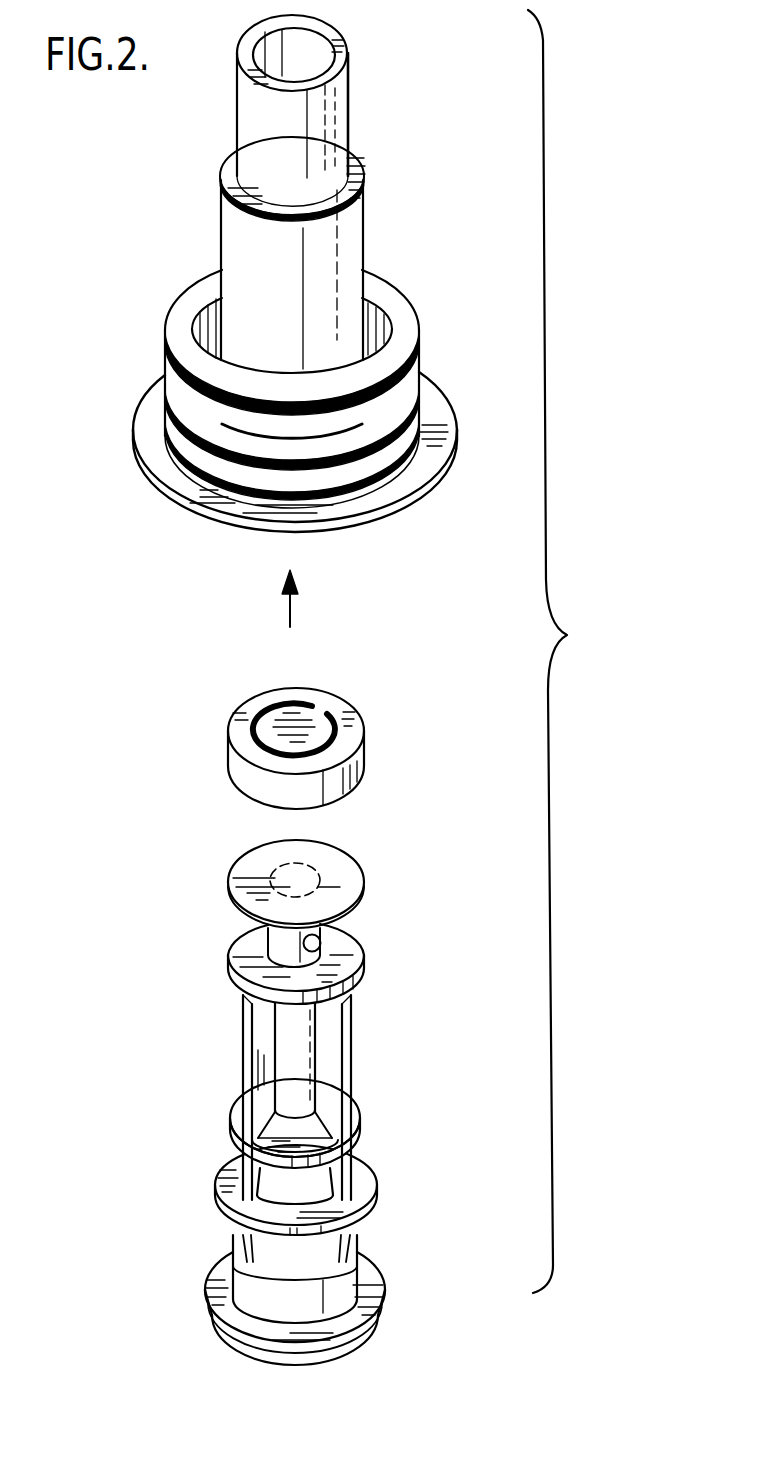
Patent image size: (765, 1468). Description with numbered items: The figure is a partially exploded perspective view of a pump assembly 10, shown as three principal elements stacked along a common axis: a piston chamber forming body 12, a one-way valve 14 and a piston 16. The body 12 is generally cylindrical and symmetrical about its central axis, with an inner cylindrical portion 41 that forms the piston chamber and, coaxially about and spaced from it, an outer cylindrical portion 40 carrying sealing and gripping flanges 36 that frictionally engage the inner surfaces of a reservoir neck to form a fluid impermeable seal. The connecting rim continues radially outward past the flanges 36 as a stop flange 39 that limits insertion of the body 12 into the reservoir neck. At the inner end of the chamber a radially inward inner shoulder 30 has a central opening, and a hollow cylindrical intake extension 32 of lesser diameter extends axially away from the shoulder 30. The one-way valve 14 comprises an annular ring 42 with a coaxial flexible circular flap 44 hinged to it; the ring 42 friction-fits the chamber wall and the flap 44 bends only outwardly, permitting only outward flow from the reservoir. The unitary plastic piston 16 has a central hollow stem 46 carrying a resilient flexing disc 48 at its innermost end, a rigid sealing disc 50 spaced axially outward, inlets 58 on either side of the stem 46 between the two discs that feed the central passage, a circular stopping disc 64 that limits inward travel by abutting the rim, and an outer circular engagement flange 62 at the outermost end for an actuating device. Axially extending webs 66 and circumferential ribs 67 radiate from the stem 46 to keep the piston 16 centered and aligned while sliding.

The pump assembly 10 is at (605, 661).
The piston chamber forming body 12 is at (281, 273).
The one-way valve 14 is at (294, 760).
The piston 16 is at (301, 1102).
The inner shoulder 30 is at (367, 167).
The intake extension 32 is at (330, 115).
The sealing and gripping flanges 36 is at (180, 440).
The stop flange 39 is at (430, 457).
The outer cylindrical portion 40 is at (192, 398).
The inner cylindrical portion 41 is at (357, 227).
The annular ring 42 is at (245, 775).
The circular flap 44 is at (262, 728).
The stem 46 is at (303, 1062).
The flexing disc 48 is at (348, 882).
The sealing disc 50 is at (335, 977).
The inlets 58 is at (320, 945).
The engagement flange 62 is at (377, 1295).
The stopping disc 64 is at (218, 1190).
The webs 66 is at (253, 1023).
The circumferential ribs 67 is at (233, 1113).